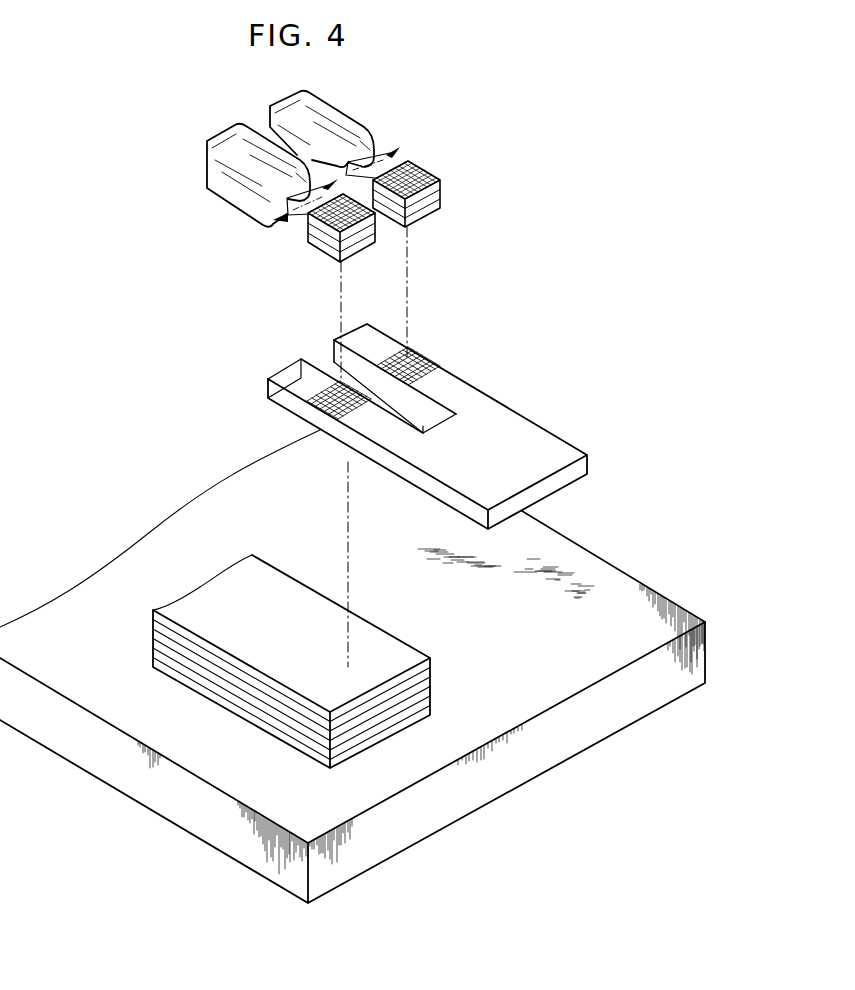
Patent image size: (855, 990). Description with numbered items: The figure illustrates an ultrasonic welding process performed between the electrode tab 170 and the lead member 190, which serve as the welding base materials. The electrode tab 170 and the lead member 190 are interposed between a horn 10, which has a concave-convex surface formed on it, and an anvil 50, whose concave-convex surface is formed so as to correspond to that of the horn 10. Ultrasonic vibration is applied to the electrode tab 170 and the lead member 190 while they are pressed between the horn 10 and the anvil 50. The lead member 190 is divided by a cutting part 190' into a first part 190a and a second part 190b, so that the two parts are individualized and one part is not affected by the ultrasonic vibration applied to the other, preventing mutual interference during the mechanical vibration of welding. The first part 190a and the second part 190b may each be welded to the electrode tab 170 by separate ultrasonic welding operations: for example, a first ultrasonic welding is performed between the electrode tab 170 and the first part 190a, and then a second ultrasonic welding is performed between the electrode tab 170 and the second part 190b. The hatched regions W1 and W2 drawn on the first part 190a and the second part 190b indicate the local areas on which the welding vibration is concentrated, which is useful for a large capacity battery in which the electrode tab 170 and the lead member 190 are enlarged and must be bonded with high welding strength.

The horn 10 is at (437, 168).
The anvil 50 is at (615, 585).
The electrode tab 170 is at (402, 655).
The lead member 190 is at (434, 426).
The first part 190a is at (289, 373).
The second part 190b is at (368, 342).
The cutting part 190' is at (376, 361).
The first window region W1 is at (307, 400).
The second window region W2 is at (417, 360).